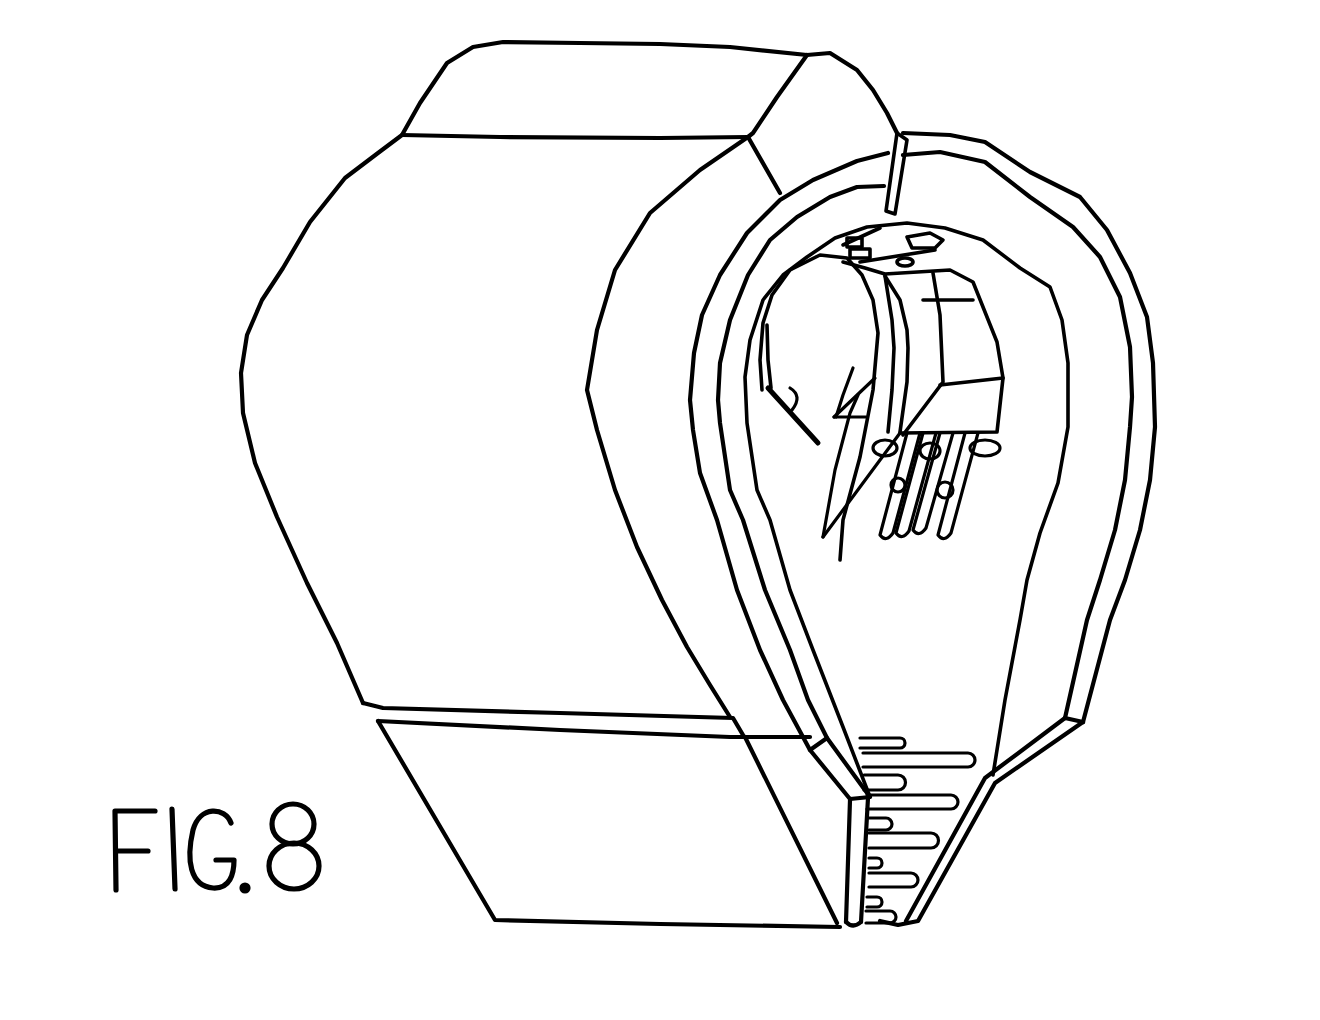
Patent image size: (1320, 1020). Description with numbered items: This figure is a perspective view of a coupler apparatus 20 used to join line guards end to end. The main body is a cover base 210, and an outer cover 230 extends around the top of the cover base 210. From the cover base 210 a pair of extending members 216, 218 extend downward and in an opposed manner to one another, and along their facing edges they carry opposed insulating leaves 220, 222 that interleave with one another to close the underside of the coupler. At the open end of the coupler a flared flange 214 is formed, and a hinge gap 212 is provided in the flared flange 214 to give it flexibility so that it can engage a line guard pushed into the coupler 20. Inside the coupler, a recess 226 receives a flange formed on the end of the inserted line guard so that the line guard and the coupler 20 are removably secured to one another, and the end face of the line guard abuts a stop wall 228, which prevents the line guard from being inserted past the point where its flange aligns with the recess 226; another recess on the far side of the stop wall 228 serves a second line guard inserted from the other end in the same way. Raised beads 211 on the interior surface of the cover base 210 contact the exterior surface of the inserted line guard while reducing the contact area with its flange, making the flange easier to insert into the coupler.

The coupler apparatus 20 is at (1198, 499).
The cover base 210 is at (997, 560).
The raised beads 211 is at (960, 495).
The hinge gap 212 is at (900, 132).
The flared flange 214 is at (1100, 243).
The extending member 216 is at (977, 827).
The extending member 218 is at (663, 807).
The insulating leaves 220 is at (928, 753).
The insulating leaves 222 is at (860, 740).
The recess 226 is at (836, 417).
The stop wall 228 is at (785, 405).
The outer cover 230 is at (348, 213).